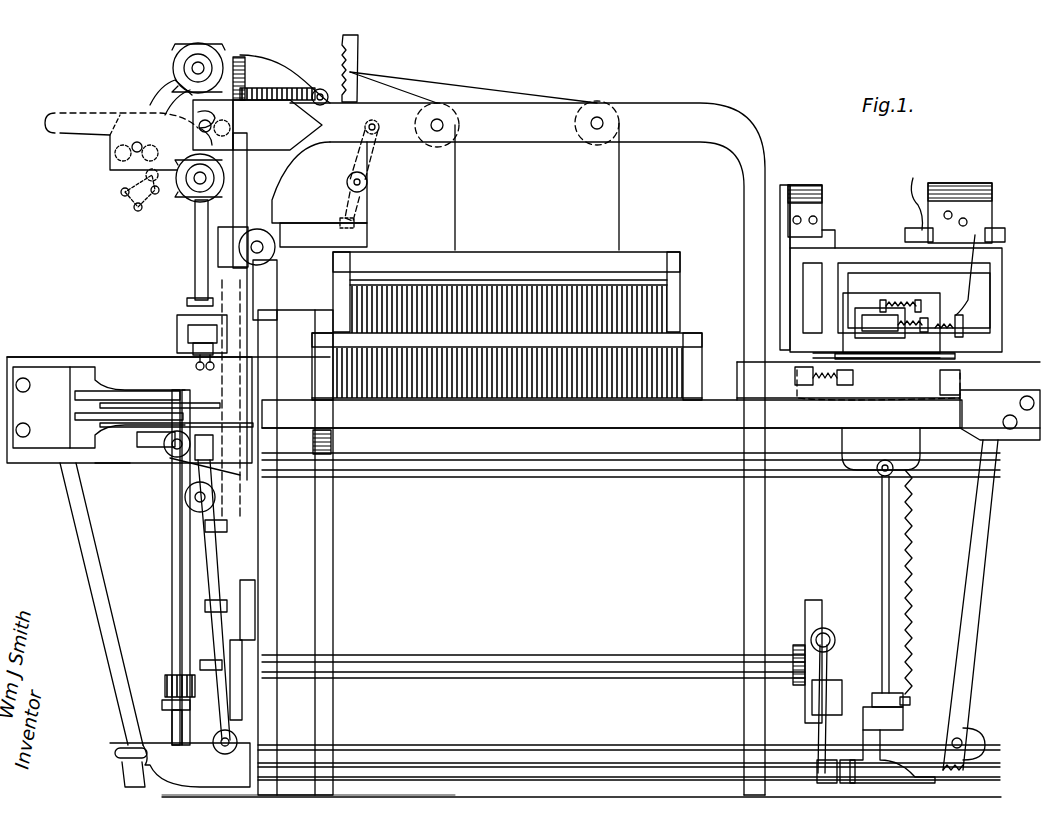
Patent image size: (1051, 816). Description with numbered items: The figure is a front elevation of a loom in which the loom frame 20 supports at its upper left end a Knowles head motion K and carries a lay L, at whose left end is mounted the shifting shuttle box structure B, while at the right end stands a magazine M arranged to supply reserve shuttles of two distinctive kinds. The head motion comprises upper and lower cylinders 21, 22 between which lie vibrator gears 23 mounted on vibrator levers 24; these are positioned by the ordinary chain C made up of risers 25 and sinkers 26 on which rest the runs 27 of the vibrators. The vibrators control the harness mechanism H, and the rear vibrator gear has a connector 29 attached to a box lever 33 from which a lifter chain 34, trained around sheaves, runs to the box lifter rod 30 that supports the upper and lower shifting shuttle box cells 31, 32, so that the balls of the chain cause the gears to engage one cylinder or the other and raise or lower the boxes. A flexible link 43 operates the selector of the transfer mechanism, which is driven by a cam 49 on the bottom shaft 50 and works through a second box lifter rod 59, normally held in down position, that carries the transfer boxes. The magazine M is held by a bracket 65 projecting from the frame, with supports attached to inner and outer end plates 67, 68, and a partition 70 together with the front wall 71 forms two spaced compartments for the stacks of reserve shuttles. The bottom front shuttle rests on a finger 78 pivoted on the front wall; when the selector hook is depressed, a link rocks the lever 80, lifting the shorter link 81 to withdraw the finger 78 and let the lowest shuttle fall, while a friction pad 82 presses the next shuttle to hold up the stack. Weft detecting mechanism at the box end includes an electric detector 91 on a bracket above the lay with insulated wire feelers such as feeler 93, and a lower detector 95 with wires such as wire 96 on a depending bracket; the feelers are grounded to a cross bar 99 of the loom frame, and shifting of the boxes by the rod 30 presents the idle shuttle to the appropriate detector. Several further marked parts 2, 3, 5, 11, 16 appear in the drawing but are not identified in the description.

The direction arrow 2 is at (46, 287).
The loom side frame leg 3 is at (1018, 505).
The lever 5 is at (810, 412).
The spring 11 is at (913, 656).
The arm 16 is at (171, 94).
The loom frame 20 is at (270, 552).
The upper cylinder 21 is at (207, 47).
The lower cylinder 22 is at (192, 195).
The vibrator gears 23 is at (197, 125).
The vibrator levers 24 is at (177, 143).
The risers 25 is at (113, 154).
The sinkers 26 is at (121, 193).
The runs of the vibrators 27 is at (125, 115).
The connector 29 is at (276, 287).
The box lifter rod 30 is at (175, 643).
The upper shifting shuttle box cell 31 is at (192, 396).
The lower shifting shuttle box cell 32 is at (112, 449).
The box lever 33 is at (370, 150).
The lifter chain 34 is at (240, 293).
The flexible link 43 is at (638, 744).
The cam 49 is at (815, 600).
The bottom shaft 50 is at (487, 678).
The box lifter rod 59 is at (882, 548).
The bracket 65 is at (772, 247).
The inner end plate 67 is at (782, 284).
The outer end plate 68 is at (988, 220).
The partition 70 is at (832, 236).
The front wall 71 is at (856, 262).
The finger 78 is at (836, 312).
The lever 80 is at (910, 196).
The shorter link 81 is at (972, 275).
The friction pad 82 is at (875, 320).
The electric detector 91 is at (190, 345).
The wire feeler 93 is at (196, 364).
The lower detector 95 is at (183, 455).
The wire feeler 96 is at (185, 336).
The cross bar 99 is at (437, 790).
The shifting shuttle box structure B is at (78, 385).
The chain C is at (120, 180).
The harness mechanism H is at (518, 258).
The Knowles head motion K is at (163, 95).
The lay L is at (300, 357).
The magazine M is at (880, 262).